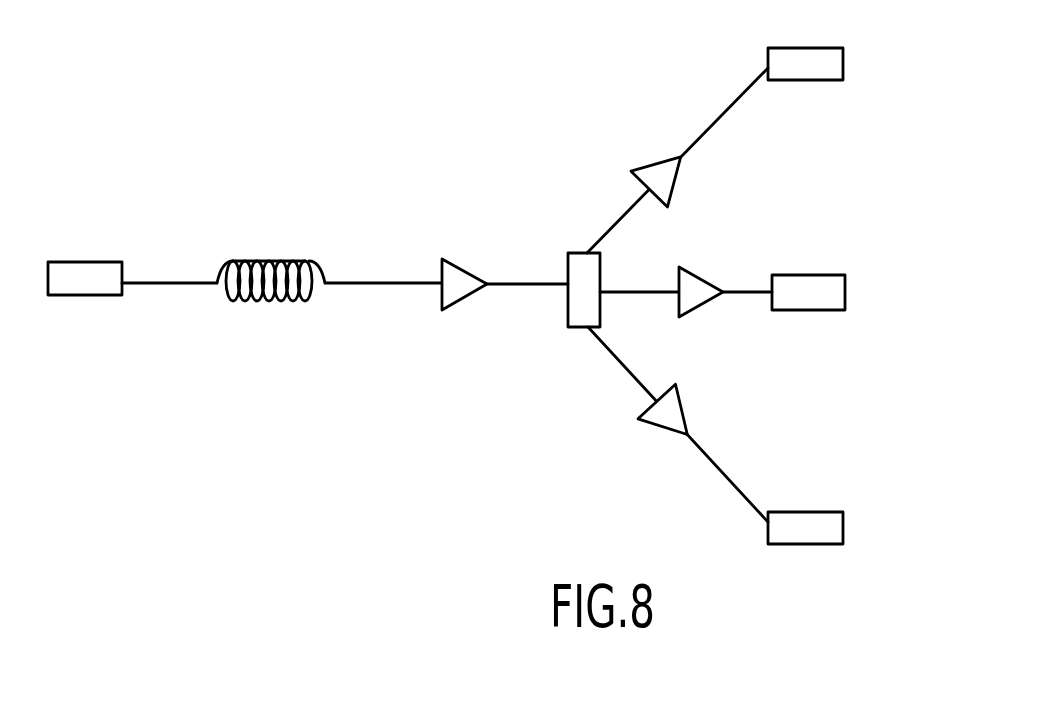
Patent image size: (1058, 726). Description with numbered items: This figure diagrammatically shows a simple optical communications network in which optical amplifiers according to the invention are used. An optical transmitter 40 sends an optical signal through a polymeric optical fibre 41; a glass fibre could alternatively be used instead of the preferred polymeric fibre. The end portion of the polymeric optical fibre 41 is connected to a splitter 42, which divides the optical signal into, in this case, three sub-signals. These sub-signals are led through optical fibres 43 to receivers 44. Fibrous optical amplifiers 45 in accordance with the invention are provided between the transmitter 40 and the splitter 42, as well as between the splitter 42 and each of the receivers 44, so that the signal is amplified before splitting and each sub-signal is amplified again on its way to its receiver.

The optical transmitter 40 is at (95, 272).
The polymeric optical fibre 41 is at (290, 260).
The splitter 42 is at (575, 300).
The optical fibres 43 is at (723, 107).
The receivers 44 is at (830, 69).
The fibrous optical amplifiers 45 is at (470, 268).